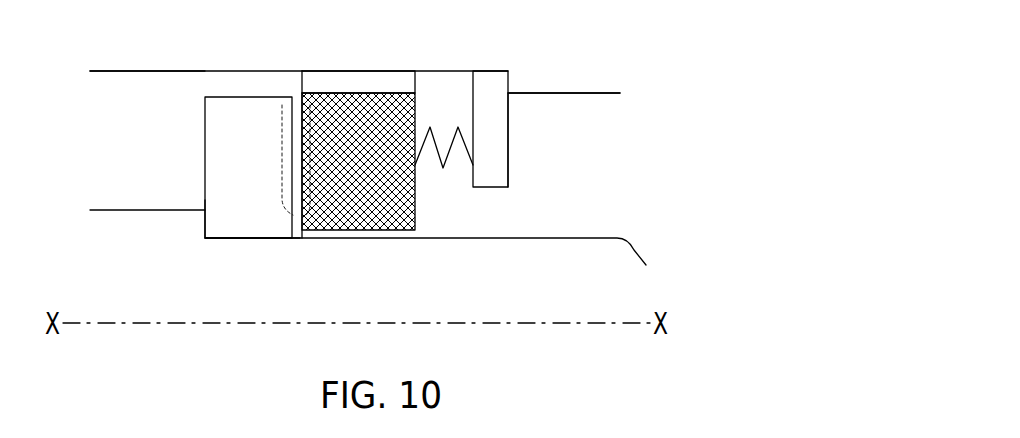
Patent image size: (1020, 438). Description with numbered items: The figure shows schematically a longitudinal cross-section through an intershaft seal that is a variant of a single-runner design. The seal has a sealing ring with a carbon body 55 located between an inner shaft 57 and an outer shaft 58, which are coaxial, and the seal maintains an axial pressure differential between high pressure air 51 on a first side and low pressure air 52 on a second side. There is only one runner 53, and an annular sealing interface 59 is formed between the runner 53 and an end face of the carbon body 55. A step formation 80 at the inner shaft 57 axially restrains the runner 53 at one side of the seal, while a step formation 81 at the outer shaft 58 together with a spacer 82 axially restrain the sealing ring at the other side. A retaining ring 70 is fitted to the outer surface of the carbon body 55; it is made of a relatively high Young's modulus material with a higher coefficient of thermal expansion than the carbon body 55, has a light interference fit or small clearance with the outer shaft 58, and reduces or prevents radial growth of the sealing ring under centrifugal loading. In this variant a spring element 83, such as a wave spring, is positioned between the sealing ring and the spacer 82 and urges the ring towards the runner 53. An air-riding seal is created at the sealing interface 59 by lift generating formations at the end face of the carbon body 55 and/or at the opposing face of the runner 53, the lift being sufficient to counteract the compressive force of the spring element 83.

The high pressure air 51 is at (141, 161).
The low pressure air 52 is at (577, 187).
The runner 53 is at (245, 115).
The carbon body 55 is at (363, 118).
The inner shaft 57 is at (445, 260).
The outer shaft 58 is at (620, 73).
The sealing interface 59 is at (296, 98).
The retaining ring 70 is at (328, 83).
The step formation 80 is at (205, 238).
The step formation 81 is at (508, 71).
The spacer 82 is at (490, 115).
The spring element 83 is at (428, 122).